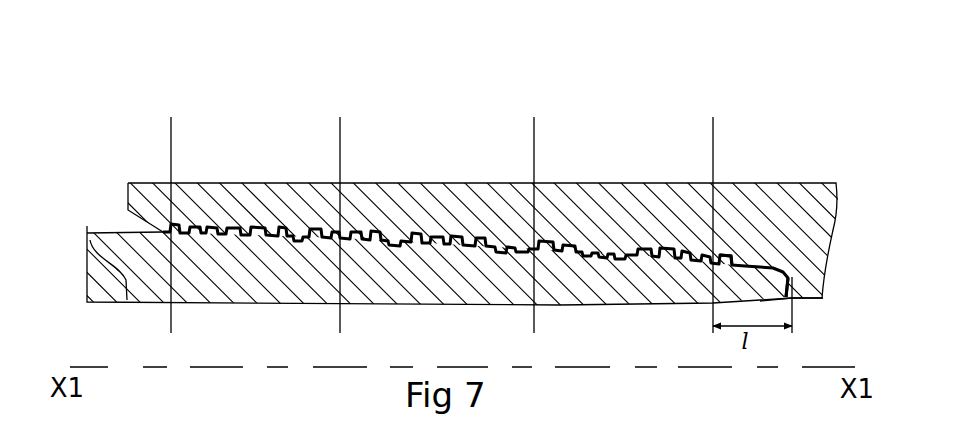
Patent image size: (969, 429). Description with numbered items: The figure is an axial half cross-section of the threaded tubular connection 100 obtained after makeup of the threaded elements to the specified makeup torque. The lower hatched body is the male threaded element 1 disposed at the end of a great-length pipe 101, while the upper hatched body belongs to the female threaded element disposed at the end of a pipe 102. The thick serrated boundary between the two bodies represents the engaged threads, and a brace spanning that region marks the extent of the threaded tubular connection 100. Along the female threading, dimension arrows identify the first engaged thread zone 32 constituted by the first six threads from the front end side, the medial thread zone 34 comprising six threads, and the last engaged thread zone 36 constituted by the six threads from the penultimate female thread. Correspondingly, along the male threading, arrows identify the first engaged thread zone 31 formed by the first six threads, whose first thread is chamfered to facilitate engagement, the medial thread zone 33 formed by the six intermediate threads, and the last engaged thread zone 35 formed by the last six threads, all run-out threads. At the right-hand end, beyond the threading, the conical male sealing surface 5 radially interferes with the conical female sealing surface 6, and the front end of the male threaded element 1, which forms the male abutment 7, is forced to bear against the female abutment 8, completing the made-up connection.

The male threaded element 1 is at (153, 308).
The male sealing surface 5 is at (768, 268).
The female sealing surface 6 is at (752, 258).
The male abutment 7 is at (793, 289).
The female abutment 8 is at (782, 282).
The first engaged thread zone 31 is at (713, 326).
The first engaged thread zone 32 is at (171, 158).
The medial thread zone 33 is at (534, 326).
The medial thread zone 34 is at (340, 158).
The last engaged thread zone 35 is at (340, 326).
The last engaged thread zone 36 is at (713, 158).
The threaded tubular connection 100 is at (182, 98).
The great-length pipe 101 is at (122, 301).
The pipe 102 is at (752, 250).